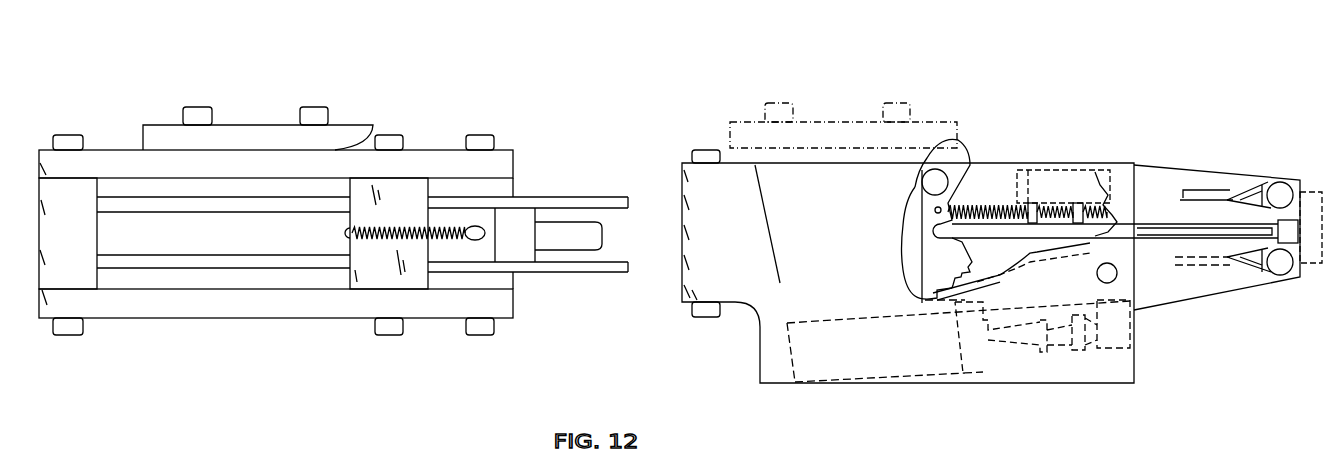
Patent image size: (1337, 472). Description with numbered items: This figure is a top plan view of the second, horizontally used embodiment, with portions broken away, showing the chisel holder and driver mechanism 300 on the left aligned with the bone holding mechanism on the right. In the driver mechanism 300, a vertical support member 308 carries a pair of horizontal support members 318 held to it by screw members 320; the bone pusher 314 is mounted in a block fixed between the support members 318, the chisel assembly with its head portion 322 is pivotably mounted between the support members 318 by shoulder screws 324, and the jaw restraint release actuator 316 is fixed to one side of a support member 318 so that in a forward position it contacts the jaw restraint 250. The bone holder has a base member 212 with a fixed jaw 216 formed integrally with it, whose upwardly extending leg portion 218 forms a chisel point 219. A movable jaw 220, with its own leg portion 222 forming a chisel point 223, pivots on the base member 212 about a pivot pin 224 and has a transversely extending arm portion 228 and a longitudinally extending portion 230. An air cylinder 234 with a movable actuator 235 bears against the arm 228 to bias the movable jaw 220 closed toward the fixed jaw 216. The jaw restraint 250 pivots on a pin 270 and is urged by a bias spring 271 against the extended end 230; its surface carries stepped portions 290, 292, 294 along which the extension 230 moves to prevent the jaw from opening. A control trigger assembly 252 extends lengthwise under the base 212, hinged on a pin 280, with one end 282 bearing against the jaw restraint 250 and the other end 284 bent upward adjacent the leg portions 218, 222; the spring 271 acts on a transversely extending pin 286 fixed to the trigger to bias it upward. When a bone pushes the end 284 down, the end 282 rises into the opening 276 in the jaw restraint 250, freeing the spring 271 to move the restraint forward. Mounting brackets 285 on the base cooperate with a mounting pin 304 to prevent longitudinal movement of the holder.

The chisel holder and driver mechanism 300 is at (527, 127).
The vertical support member 308 is at (73, 281).
The bone pusher 314 is at (591, 237).
The jaw restraint release actuator 316 is at (213, 128).
The horizontal support members 318 is at (504, 167).
The screw members 320 is at (61, 326).
The shoulder screws 324 is at (390, 241).
The base member 212 is at (710, 255).
The fixed jaw 216 is at (1166, 185).
The upwardly extending leg portion 218 is at (1279, 188).
The chisel point 219 is at (1241, 195).
The movable jaw 220 is at (1190, 281).
The upwardly extending leg portion 222 is at (1281, 270).
The chisel point 223 is at (1241, 263).
The pivot pin 224 is at (1111, 274).
The transversely extending arm portion 228 is at (1131, 330).
The longitudinally extending portion 230 is at (986, 287).
The air cylinder 234 is at (842, 366).
The movable actuator 235 is at (1024, 340).
The jaw restraint 250 is at (958, 140).
The control trigger assembly 252 is at (1192, 229).
The pin 270 is at (936, 181).
The bias spring 271 is at (976, 205).
The opening 276 is at (933, 211).
The pin 280 is at (1033, 208).
The end of control trigger assembly 282 is at (929, 231).
The other end of control trigger assembly 284 is at (1266, 232).
The mounting brackets 285 is at (1294, 245).
The transversely extending pin 286 is at (1086, 205).
The stepped portion 290 is at (940, 287).
The stepped portion 292 is at (965, 274).
The stepped portion 294 is at (963, 262).
The mounting pin 304 is at (705, 318).
The head portion 322 is at (1306, 195).